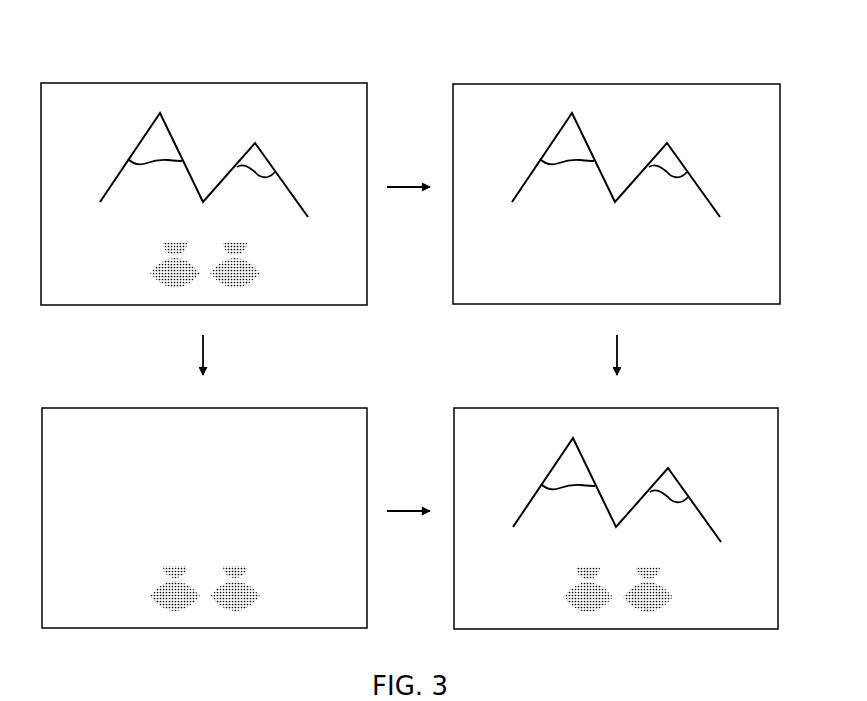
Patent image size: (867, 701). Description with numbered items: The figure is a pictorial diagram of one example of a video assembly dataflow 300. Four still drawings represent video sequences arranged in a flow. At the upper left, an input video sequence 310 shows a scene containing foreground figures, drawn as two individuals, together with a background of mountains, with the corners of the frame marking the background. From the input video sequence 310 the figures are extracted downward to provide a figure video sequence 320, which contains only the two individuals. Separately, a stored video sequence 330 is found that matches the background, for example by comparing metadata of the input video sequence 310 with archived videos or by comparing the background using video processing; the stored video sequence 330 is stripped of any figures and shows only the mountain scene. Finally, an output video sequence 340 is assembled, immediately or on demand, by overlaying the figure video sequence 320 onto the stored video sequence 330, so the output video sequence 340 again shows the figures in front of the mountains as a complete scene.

The video assembly dataflow 300 is at (735, 43).
The input video sequence 310 is at (310, 216).
The figure video sequence 320 is at (204, 518).
The stored video sequence 330 is at (617, 179).
The output video sequence 340 is at (619, 505).